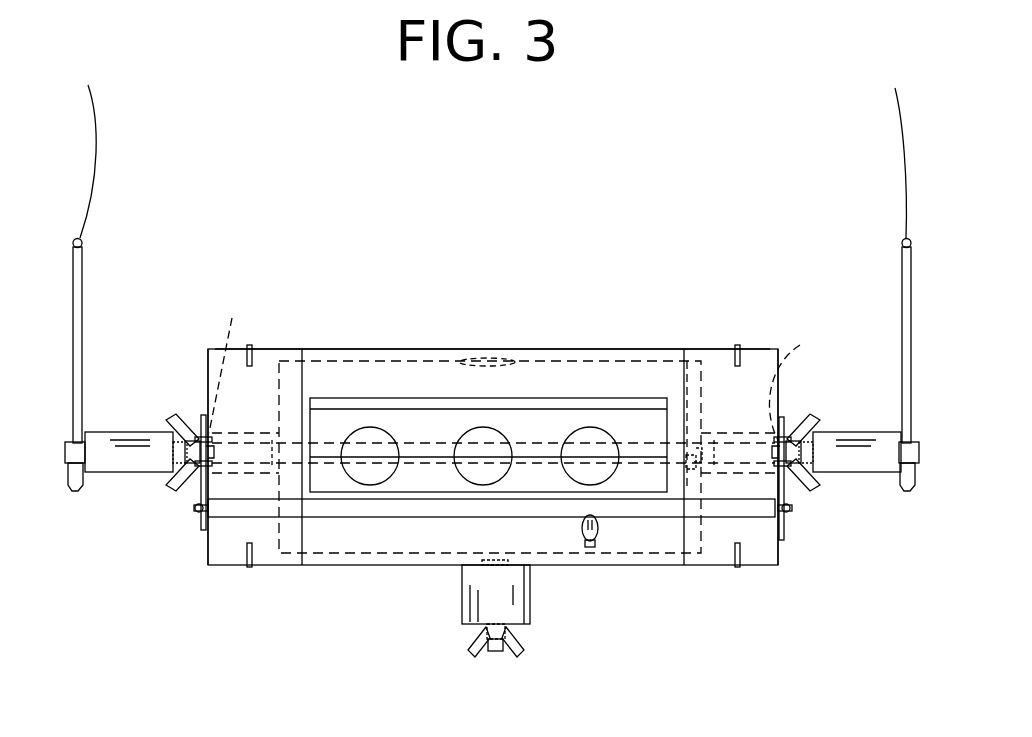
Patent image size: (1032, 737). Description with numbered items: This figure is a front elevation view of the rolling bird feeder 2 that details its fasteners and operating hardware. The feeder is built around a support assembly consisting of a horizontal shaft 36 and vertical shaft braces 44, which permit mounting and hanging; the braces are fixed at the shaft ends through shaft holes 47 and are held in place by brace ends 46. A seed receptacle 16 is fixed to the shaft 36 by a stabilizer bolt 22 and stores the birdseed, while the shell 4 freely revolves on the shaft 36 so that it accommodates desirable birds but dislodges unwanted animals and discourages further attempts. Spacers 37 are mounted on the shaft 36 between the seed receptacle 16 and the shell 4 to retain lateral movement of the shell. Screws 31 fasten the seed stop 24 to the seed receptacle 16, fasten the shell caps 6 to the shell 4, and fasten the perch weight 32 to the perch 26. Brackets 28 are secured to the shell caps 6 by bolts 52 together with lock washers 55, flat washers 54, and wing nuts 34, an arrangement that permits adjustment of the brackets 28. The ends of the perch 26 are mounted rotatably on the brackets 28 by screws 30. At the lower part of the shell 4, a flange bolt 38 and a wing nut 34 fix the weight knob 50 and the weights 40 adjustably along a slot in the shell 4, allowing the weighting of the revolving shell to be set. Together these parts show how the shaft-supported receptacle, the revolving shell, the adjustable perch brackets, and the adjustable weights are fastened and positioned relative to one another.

The rolling bird feeder 2 is at (519, 320).
The shell 4 is at (443, 351).
The shell caps 6 is at (280, 566).
The seed receptacle 16 is at (563, 361).
The stabilizer bolt 22 is at (681, 356).
The seed stop 24 is at (370, 455).
The perch 26 is at (348, 518).
The brackets 28 is at (204, 530).
The screws 30 is at (197, 513).
The screws 31 is at (250, 345).
The perch weight 32 is at (600, 533).
The wing nuts 34 is at (172, 478).
The horizontal shaft 36 is at (323, 440).
The spacers 37 is at (262, 432).
The flange bolt 38 is at (494, 652).
The weights 40 is at (523, 602).
The vertical shaft braces 44 is at (82, 306).
The brace ends 46 is at (78, 491).
The shaft holes 47 is at (88, 445).
The weight knob 50 is at (462, 572).
The bolts 52 is at (180, 452).
The flat washers 54 is at (202, 443).
The lock washers 55 is at (519, 363).